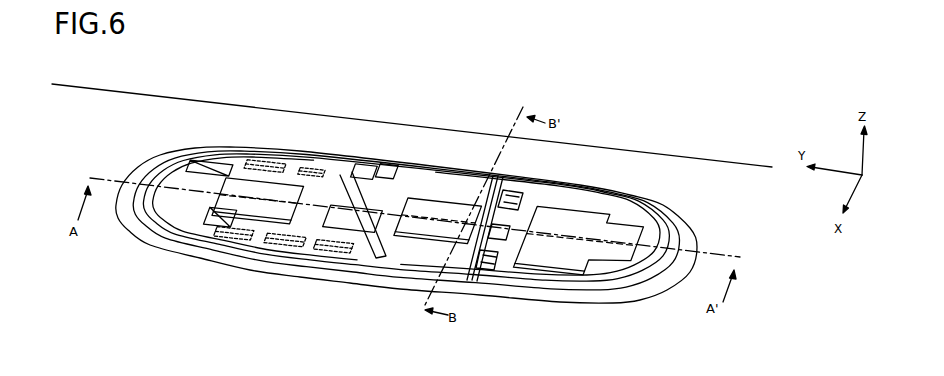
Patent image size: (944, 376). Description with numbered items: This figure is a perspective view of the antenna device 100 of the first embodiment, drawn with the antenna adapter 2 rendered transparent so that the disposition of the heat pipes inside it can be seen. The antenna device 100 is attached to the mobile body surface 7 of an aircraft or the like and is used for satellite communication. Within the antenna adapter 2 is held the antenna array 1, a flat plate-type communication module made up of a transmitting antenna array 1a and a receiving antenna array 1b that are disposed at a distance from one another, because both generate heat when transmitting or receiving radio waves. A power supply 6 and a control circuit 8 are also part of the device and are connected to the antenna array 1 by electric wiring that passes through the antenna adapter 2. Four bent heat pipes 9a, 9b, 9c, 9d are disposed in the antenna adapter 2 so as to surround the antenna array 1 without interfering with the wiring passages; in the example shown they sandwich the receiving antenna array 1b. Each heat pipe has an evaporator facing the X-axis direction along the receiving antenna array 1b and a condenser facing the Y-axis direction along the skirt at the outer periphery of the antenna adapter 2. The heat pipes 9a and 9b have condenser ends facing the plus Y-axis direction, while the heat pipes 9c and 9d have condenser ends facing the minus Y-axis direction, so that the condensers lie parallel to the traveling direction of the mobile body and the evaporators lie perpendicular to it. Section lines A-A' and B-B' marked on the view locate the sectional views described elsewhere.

The antenna device 100 is at (684, 78).
The antenna array 1 is at (346, 273).
The transmitting antenna array 1a is at (250, 212).
The receiving antenna array 1b is at (402, 236).
The antenna adapter 2 is at (588, 302).
The power supply 6 is at (612, 216).
The mobile body surface 7 is at (115, 142).
The control circuit 8 is at (336, 200).
The heat pipe 9a is at (358, 172).
The heat pipe 9b is at (386, 163).
The heat pipe 9c is at (481, 269).
The heat pipe 9d is at (525, 190).